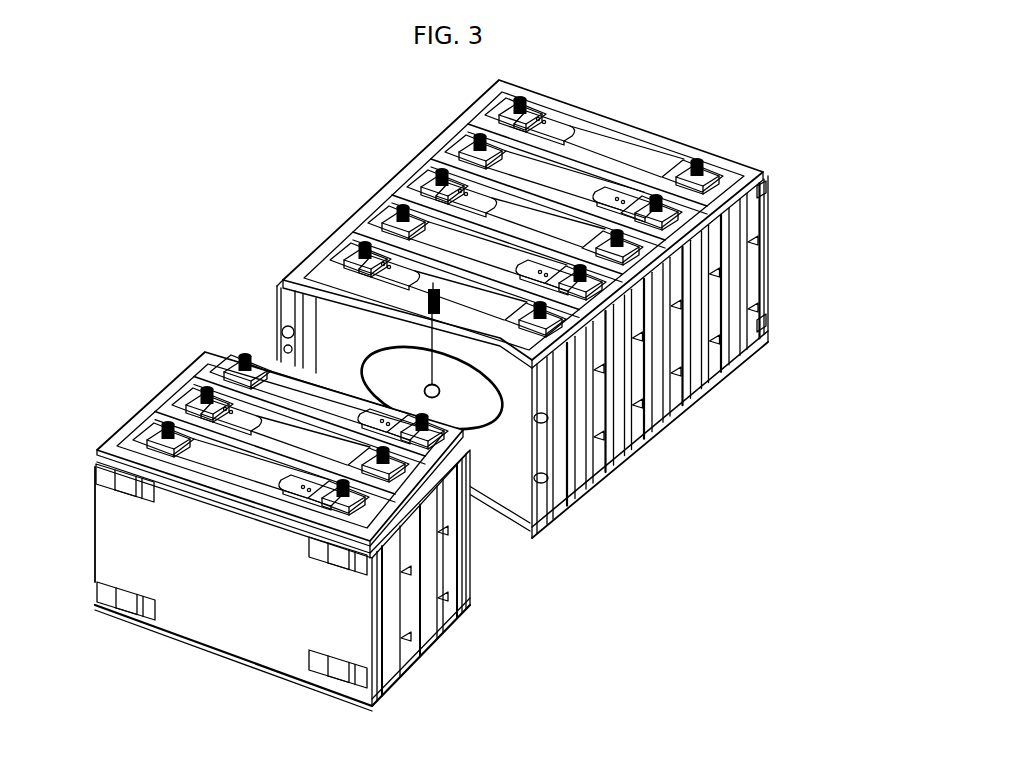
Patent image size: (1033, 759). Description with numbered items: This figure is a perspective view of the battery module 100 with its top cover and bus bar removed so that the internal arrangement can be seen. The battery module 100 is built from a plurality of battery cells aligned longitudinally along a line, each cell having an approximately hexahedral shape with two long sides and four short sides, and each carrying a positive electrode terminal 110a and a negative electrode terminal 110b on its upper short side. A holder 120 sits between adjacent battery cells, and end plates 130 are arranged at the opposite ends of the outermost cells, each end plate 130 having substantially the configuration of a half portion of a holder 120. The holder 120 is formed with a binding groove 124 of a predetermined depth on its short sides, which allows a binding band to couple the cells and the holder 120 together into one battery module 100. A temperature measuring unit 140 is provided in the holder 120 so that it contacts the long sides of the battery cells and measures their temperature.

The battery module 100 is at (538, 309).
The positive electrode terminal 110a is at (202, 388).
The negative electrode terminal 110b is at (152, 428).
The holder 120 is at (575, 333).
The binding groove 124 is at (738, 220).
The end plate 130 is at (258, 506).
The temperature measuring unit 140 is at (428, 293).